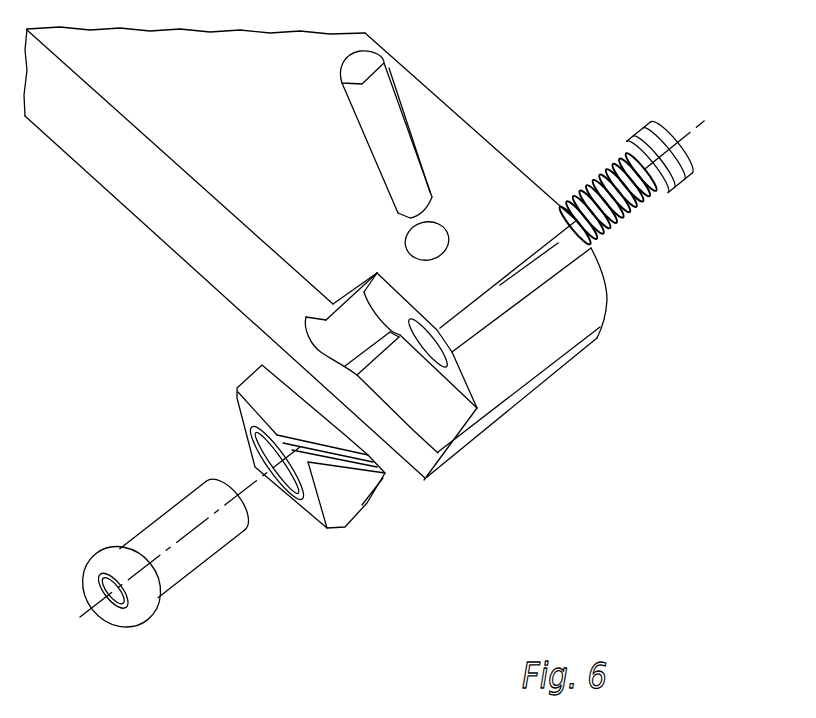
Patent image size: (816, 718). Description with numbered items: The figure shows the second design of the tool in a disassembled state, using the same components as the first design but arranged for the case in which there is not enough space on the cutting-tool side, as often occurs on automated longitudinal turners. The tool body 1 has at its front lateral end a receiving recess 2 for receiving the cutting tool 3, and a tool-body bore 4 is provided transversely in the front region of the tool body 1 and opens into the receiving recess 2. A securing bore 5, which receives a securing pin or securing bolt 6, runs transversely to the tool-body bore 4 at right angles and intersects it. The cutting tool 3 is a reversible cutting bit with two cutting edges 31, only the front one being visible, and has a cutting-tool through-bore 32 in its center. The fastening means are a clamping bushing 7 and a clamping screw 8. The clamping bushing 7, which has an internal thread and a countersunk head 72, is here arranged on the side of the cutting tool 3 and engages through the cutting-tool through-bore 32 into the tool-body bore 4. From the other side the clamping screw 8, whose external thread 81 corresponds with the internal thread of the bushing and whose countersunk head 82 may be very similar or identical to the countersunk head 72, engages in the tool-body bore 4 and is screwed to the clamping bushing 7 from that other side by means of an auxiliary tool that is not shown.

The tool body 1 is at (78, 137).
The receiving recess 2 is at (441, 418).
The cutting tool 3 is at (267, 479).
The cutting edges 31 is at (368, 506).
The cutting-tool through-bore 32 is at (297, 503).
The tool-body bore 4 is at (437, 353).
The securing bore 5 is at (438, 230).
The securing pin 6 is at (368, 63).
The clamping bushing 7 is at (158, 520).
The countersunk head 72 is at (96, 550).
The clamping screw 8 is at (663, 208).
The external thread 81 is at (617, 223).
The countersunk head 82 is at (690, 177).